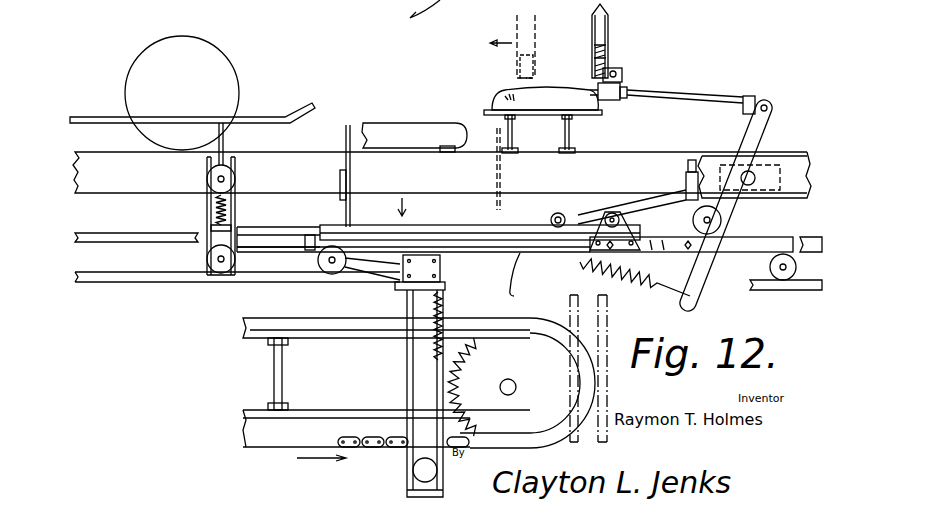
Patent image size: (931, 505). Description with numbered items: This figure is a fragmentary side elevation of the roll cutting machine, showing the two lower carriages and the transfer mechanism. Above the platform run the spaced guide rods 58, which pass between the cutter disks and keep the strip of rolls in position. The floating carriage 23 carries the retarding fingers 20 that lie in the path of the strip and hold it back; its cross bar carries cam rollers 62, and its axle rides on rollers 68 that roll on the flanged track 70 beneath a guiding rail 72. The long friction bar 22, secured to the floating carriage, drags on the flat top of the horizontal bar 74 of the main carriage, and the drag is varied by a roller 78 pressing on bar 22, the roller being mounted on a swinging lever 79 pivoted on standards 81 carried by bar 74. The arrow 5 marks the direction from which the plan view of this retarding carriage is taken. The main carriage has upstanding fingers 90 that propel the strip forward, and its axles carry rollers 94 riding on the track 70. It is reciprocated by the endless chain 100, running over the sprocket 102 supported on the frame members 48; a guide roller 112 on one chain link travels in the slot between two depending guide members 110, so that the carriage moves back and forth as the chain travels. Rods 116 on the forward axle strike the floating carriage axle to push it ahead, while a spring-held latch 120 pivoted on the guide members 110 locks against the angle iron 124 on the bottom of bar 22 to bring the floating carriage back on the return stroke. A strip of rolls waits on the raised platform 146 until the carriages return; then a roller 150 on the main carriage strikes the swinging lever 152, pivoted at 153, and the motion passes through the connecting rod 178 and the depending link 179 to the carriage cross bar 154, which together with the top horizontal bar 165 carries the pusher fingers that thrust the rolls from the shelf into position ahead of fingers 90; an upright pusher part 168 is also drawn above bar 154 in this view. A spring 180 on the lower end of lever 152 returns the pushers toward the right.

The arrow 5 is at (409, 210).
The fingers 20 is at (225, 135).
The friction bar 22 is at (242, 236).
The floating carriage 23 is at (207, 218).
The intermediate horizontal frame members 48 is at (357, 406).
The guide rods 58 is at (294, 117).
The cam rollers 62 is at (207, 180).
The rollers 68 is at (207, 260).
The flanged track 70 is at (137, 275).
The rail 72 is at (130, 238).
The horizontal bar 74 is at (528, 281).
The roller 78 is at (551, 219).
The swinging lever 79 is at (576, 215).
The standards 81 is at (625, 253).
The fingers 90 is at (346, 133).
The rollers 94 is at (770, 267).
The endless chain 100 is at (325, 327).
The sprocket 102 is at (501, 372).
The guide members 110 is at (440, 271).
The guide roller 112 is at (412, 470).
The rods 116 is at (262, 262).
The latch 120 is at (318, 270).
The angle iron 124 is at (305, 243).
The platform 146 is at (553, 116).
The roller 150 is at (735, 212).
The swinging lever 152 is at (690, 298).
The pivot 153 is at (760, 175).
The lower horizontal bar 154 is at (603, 75).
The top horizontal bar 165 is at (594, 55).
The nozzle 168 is at (607, 39).
The connecting rod 178 is at (698, 95).
The depending link 179 is at (609, 100).
The spring 180 is at (580, 277).